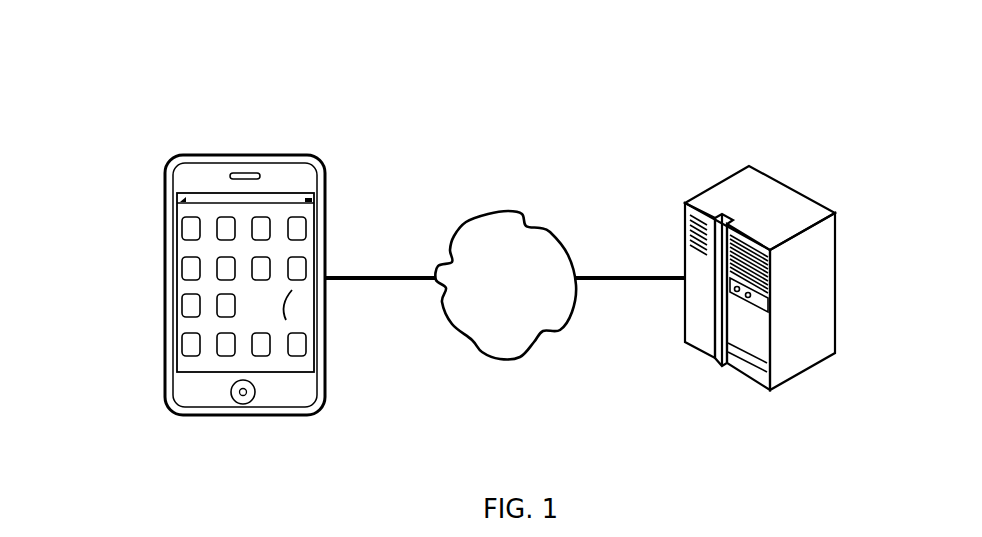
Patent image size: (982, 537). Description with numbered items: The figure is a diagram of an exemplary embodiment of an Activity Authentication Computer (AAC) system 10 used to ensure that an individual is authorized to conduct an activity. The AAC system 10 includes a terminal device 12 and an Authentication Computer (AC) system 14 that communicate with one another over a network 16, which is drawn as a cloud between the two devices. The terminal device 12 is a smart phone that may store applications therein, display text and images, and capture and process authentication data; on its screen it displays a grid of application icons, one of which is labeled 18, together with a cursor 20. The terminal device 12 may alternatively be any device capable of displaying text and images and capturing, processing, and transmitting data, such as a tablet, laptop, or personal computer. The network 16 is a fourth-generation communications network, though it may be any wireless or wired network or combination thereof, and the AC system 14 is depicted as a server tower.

The Activity Authentication Computer (AAC) system 10 is at (148, 70).
The terminal device 12 is at (243, 155).
The Authentication Computer (AC) system 14 is at (749, 167).
The communications network 16 is at (505, 285).
The application icon 18 is at (191, 228).
The cursor 20 is at (292, 303).